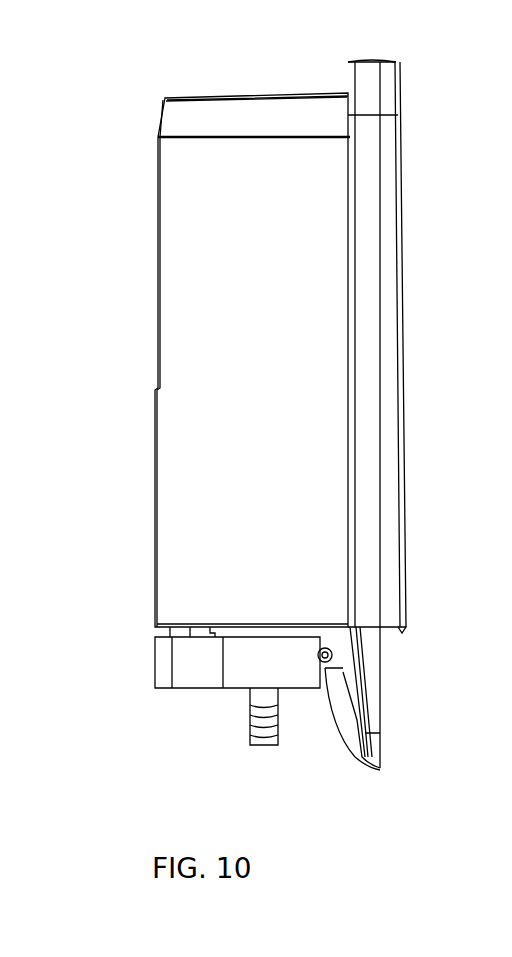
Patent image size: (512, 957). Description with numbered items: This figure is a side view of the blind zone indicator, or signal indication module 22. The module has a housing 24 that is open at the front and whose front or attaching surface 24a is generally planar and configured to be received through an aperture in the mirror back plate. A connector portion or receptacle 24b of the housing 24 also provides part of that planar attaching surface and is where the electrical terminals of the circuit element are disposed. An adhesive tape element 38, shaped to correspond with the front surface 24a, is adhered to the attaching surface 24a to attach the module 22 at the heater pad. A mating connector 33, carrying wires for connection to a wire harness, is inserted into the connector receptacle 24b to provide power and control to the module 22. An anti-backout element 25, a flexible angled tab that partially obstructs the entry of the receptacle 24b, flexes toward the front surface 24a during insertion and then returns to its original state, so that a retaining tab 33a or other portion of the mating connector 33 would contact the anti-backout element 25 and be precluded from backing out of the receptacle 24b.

The signal indication module 22 is at (157, 318).
The housing 24 is at (265, 157).
The front or attaching surface 24a is at (392, 60).
The connector portion or receptacle 24b is at (245, 580).
The adhesive tape element 38 is at (398, 338).
The mating connector 33 is at (265, 652).
The retaining tab 33a is at (333, 655).
The anti-backout element 25 is at (343, 732).